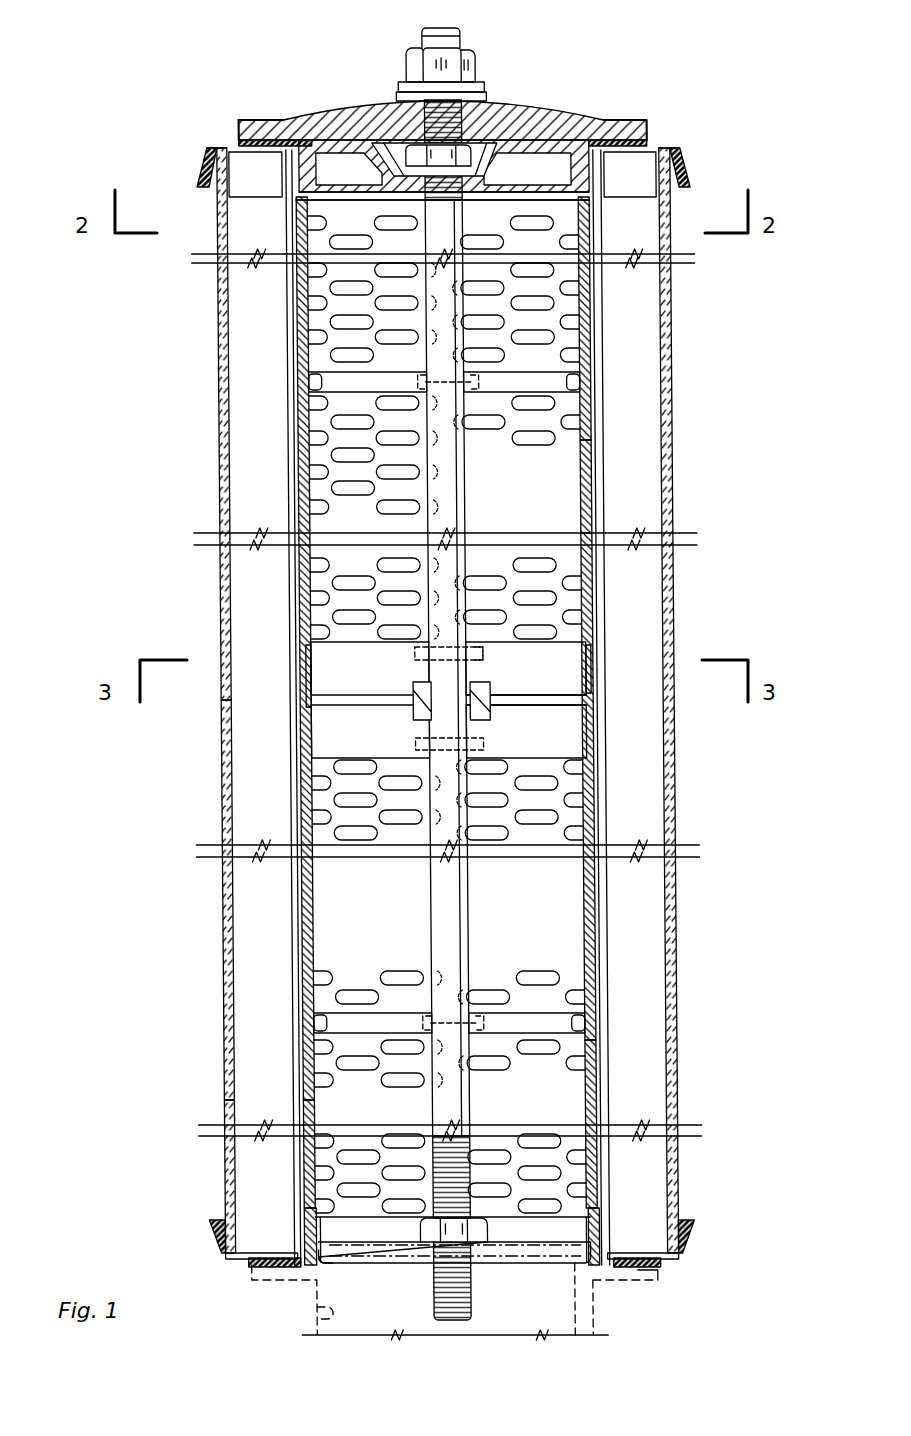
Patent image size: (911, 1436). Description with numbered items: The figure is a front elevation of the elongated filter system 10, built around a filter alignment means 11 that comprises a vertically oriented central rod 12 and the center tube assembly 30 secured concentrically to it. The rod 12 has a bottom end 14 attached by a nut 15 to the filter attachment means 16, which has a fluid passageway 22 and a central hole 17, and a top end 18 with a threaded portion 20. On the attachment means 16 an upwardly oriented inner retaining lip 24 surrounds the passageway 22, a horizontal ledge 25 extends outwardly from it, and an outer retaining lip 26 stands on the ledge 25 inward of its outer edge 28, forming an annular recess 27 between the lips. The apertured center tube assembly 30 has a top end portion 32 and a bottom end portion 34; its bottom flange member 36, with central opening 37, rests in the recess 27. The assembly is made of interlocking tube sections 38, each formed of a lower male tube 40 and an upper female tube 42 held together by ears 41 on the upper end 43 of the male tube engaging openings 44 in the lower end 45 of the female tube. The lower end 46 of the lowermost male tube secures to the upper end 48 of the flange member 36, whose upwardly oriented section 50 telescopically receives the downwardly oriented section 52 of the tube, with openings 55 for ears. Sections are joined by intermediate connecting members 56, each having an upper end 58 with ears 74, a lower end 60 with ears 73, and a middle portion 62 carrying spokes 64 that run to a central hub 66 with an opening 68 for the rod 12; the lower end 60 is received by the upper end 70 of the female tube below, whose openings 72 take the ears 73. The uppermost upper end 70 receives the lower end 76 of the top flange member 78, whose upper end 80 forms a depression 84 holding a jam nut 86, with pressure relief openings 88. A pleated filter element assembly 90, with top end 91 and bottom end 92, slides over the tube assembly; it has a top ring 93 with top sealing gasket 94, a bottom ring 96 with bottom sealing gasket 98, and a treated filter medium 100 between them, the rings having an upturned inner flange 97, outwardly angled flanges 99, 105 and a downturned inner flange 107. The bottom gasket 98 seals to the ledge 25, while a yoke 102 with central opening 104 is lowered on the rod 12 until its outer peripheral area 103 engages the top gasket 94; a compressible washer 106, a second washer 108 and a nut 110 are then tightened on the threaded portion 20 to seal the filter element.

The elongated filter system 10 is at (277, 50).
The elongated filter alignment means 11 is at (584, 50).
The central rod 12 is at (450, 905).
The bottom end 14 is at (466, 1320).
The nut 15 is at (470, 1246).
The filter attachment means 16 is at (580, 1297).
The central hole 17 is at (433, 1250).
The top end 18 is at (458, 32).
The threaded portion 20 is at (548, 111).
The fluid passageway 22 is at (310, 1310).
The inner retaining lip 24 is at (578, 1237).
The ledge 25 is at (653, 1261).
The outer retaining lip 26 is at (605, 1226).
The annular recess 27 is at (313, 1263).
The outer edge 28 is at (652, 1272).
The center tube assembly 30 is at (672, 462).
The top end portion 32 is at (588, 227).
The bottom end portion 34 is at (574, 1240).
The bottom flange member 36 is at (290, 1215).
The central opening 37 is at (380, 1265).
The interlocking tube section 38 is at (545, 385).
The lower male tube 40 is at (568, 506).
The ears 41 is at (592, 355).
The upper female tube 42 is at (603, 307).
The upper end 43 is at (598, 390).
The openings 44 is at (418, 382).
The lower end 45 is at (308, 382).
The lower end 46 is at (590, 583).
The upper end 48 is at (304, 1228).
The upwardly oriented section 50 is at (604, 1223).
The downwardly oriented section 52 is at (591, 642).
The openings 55 is at (486, 653).
The intermediate connecting member 56 is at (592, 688).
The upper end 58 is at (574, 668).
The lower end 60 is at (576, 752).
The middle portion 62 is at (590, 707).
The spokes 64 is at (330, 697).
The central hub 66 is at (410, 683).
The opening 68 is at (426, 723).
The upper end 70 is at (287, 190).
The openings 72 is at (484, 742).
The ears 73 is at (410, 746).
The ears 74 is at (412, 653).
The lower end 76 is at (690, 172).
The top flange member 78 is at (560, 118).
The upper end 80 is at (652, 120).
The upwardly facing depression 84 is at (377, 108).
The jam nut 86 is at (383, 177).
The pressure relief openings 88 is at (395, 100).
The pleated filter element assembly 90 is at (288, 598).
The top end 91 is at (213, 242).
The bottom end 92 is at (222, 1158).
The top ring 93 is at (233, 142).
The top sealing gasket 94 is at (238, 142).
The bottom ring 96 is at (242, 1258).
The upturned inner flange 97 is at (290, 1237).
The bottom sealing gasket 98 is at (245, 1267).
The outwardly angled flange 99 is at (202, 1228).
The treated filter medium 100 is at (228, 893).
The yoke 102 is at (285, 118).
The outer peripheral area 103 is at (277, 115).
The central opening 104 is at (420, 100).
The outwardly angled flange 105 is at (200, 178).
The compressible washer 106 is at (490, 95).
The downturned inner flange 107 is at (277, 172).
The second washer 108 is at (484, 84).
The nut 110 is at (480, 53).